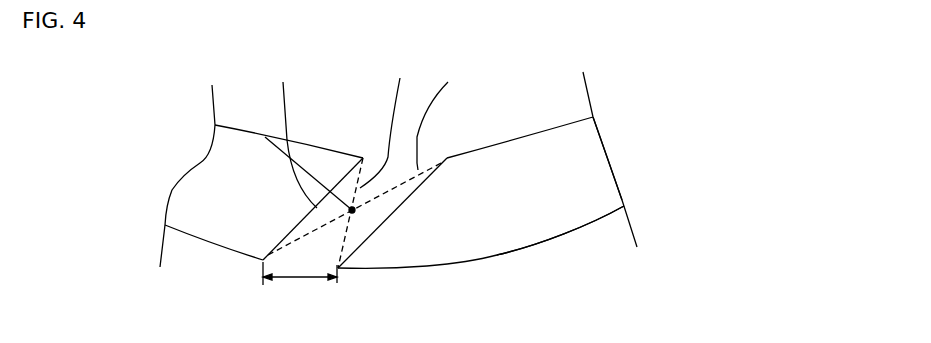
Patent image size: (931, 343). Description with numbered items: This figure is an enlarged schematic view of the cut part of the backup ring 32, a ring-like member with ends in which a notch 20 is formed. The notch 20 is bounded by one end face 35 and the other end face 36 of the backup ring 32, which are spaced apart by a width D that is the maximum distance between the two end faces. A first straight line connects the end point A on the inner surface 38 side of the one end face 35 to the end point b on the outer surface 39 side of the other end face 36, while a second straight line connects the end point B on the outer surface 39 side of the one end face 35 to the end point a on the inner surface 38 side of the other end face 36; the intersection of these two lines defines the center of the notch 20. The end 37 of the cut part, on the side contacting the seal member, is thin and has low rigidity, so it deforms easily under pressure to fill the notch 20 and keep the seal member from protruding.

The notch 20 is at (363, 223).
The backup ring 32 is at (528, 220).
The one end face 35 is at (317, 208).
The other end face 36 is at (398, 196).
The end of cut part 37 is at (352, 166).
The inner surface 38 is at (237, 130).
The outer surface 39 is at (497, 255).